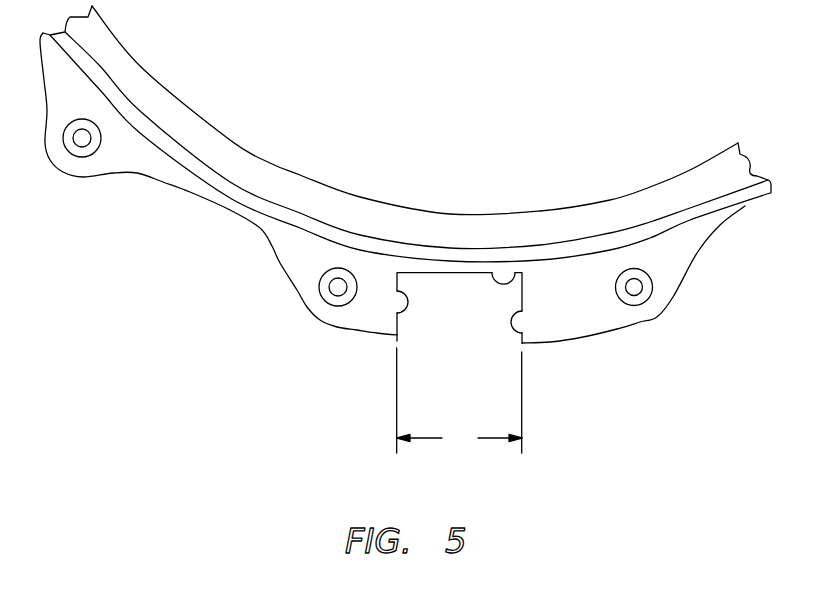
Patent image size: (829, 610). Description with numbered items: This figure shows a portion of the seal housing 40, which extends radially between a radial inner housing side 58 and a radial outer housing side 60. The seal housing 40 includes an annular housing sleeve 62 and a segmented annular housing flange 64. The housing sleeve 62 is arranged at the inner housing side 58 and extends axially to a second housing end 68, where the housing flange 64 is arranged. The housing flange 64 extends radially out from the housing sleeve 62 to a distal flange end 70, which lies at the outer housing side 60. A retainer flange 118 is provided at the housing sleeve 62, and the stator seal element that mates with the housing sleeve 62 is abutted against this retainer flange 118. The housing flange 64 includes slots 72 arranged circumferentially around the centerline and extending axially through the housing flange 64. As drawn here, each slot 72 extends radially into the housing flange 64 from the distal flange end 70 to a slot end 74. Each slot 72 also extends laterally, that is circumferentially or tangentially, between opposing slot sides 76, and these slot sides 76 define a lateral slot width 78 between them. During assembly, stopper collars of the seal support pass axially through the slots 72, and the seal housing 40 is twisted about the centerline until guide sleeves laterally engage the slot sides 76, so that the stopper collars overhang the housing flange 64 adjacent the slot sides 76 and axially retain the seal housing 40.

The seal housing 40 is at (181, 93).
The radial inner housing side 58 is at (677, 172).
The housing sleeve 62 is at (243, 187).
The housing flange 64 is at (273, 256).
The second housing end 68 is at (716, 202).
The retainer flange 118 is at (410, 159).
The radial outer housing side 60 is at (392, 243).
The distal flange end 70 is at (392, 243).
The slot 72 is at (470, 319).
The slot end 74 is at (513, 270).
The slot sides 76 is at (396, 291).
The lateral slot width 78 is at (459, 400).